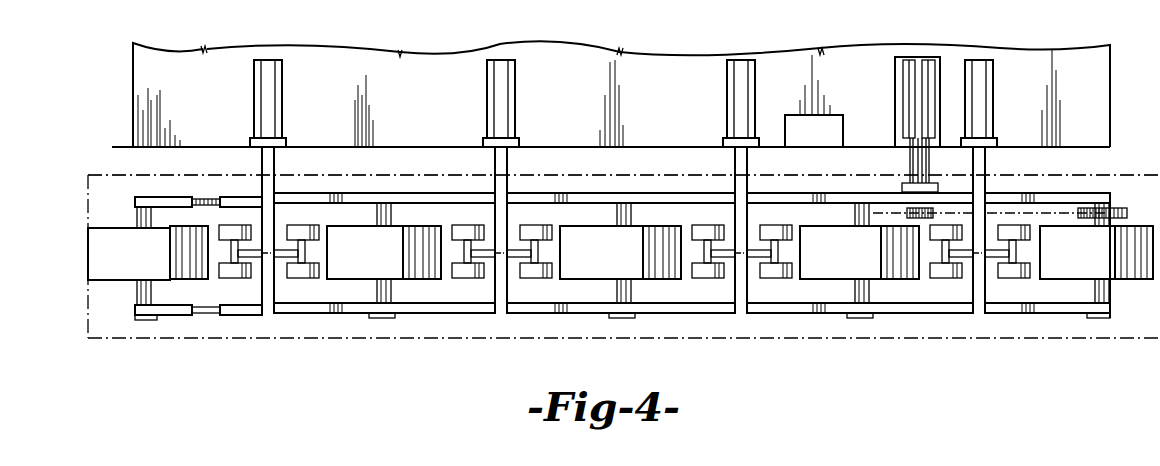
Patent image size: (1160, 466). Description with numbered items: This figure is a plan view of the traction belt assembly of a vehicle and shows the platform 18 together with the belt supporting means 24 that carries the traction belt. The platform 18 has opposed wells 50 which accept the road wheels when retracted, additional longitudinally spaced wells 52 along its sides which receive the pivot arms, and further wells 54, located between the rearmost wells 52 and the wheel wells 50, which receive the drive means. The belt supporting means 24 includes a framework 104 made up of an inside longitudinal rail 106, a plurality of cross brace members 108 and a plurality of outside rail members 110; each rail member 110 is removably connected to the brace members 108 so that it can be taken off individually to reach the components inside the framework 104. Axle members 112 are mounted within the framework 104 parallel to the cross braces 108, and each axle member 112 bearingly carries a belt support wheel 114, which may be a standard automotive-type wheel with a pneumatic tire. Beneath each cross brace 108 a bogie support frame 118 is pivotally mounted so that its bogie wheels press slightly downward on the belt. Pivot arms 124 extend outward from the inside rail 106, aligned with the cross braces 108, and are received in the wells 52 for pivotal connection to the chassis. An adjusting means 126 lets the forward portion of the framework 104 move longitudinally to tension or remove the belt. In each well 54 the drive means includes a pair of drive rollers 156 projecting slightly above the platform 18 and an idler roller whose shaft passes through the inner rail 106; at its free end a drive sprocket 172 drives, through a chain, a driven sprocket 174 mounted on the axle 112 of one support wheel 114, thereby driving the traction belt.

The platform 18 is at (1110, 98).
The belt supporting means 24 is at (1054, 320).
The wells 50 is at (814, 131).
The wells 52 is at (276, 106).
The wells 54 is at (895, 78).
The framework 104 is at (348, 320).
The inside longitudinal rail 106 is at (460, 201).
The cross brace members 108 is at (272, 292).
The outside rail members 110 is at (258, 313).
The axle members 112 is at (135, 297).
The belt support wheel 114 is at (130, 265).
The bogie support frame 118 is at (254, 253).
The pivot arms 124 is at (151, 192).
The adjusting means 126 is at (208, 196).
The drive rollers 156 is at (928, 66).
The drive sprocket 172 is at (906, 213).
The driven sprocket 174 is at (1129, 214).